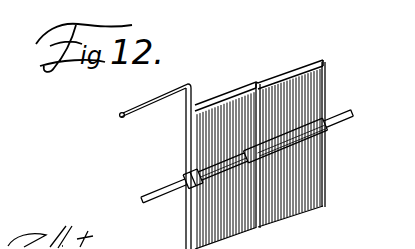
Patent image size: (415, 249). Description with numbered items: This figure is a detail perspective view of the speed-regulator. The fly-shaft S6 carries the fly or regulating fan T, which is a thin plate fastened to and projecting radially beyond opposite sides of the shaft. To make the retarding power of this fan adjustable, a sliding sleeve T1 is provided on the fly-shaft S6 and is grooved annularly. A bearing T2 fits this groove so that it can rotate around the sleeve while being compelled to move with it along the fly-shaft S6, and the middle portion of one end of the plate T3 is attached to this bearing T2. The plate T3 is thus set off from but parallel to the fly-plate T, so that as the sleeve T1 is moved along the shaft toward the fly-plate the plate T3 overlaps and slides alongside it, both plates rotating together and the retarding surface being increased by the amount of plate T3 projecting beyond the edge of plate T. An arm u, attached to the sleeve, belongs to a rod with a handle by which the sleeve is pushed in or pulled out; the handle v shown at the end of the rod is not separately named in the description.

The handle v is at (134, 94).
The arm u is at (186, 133).
The plate T3 is at (226, 100).
The bearing T2 is at (184, 204).
The fly or regulating fan T is at (256, 229).
The fly-shaft S6 is at (140, 201).
The sliding sleeve T1 is at (183, 179).